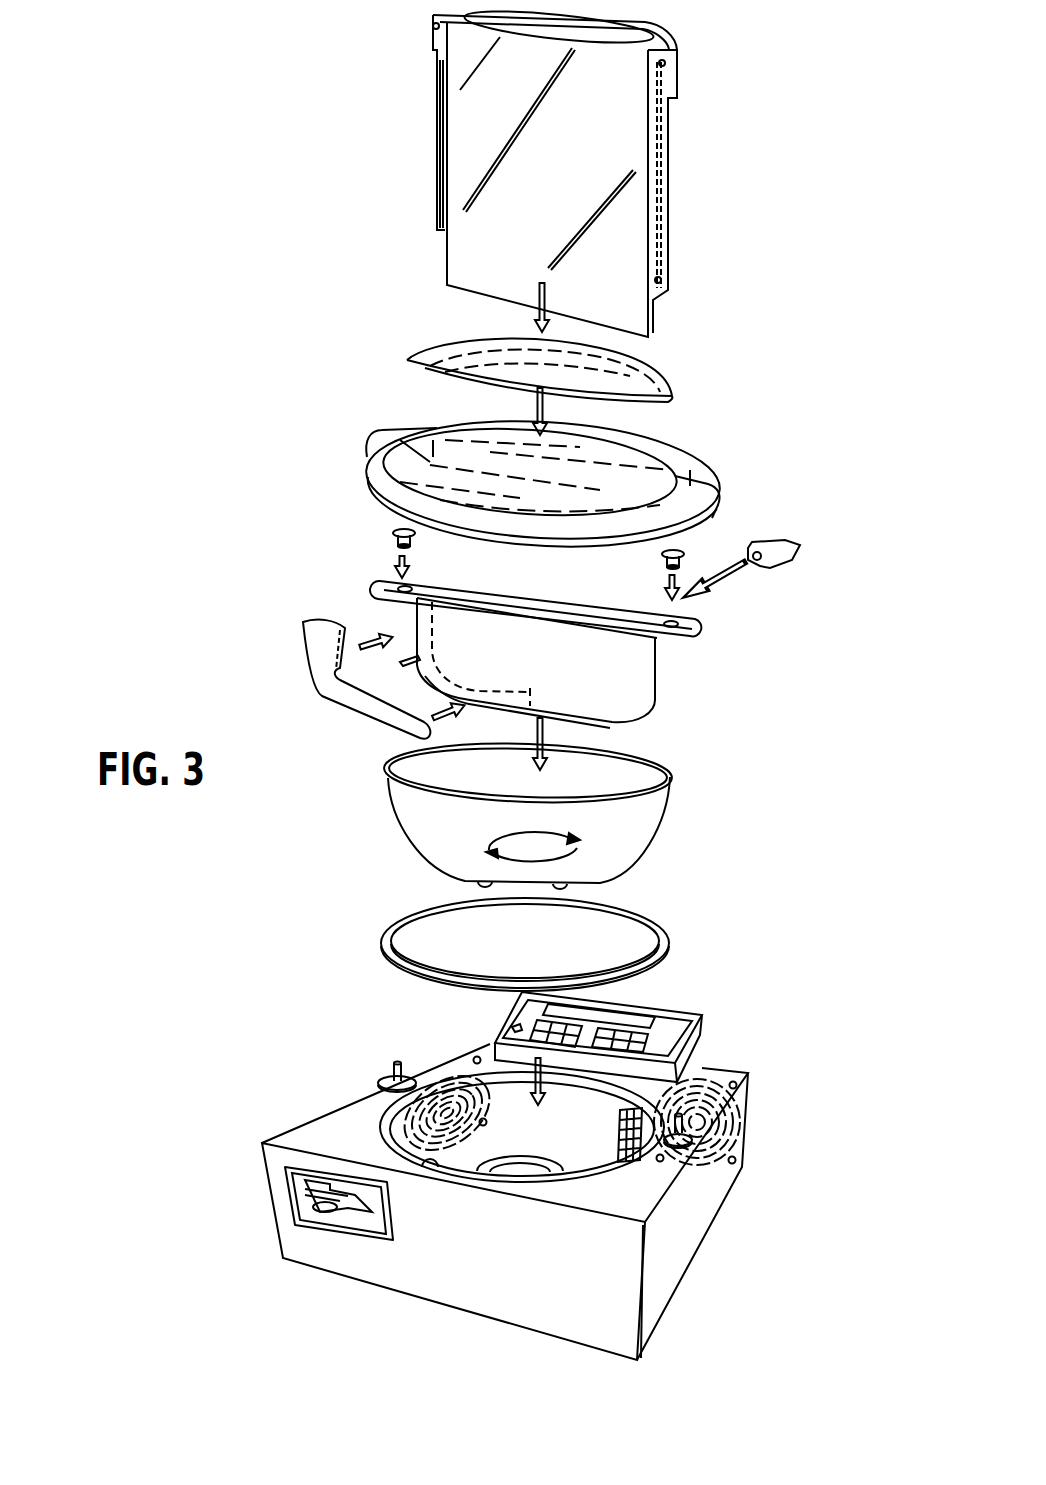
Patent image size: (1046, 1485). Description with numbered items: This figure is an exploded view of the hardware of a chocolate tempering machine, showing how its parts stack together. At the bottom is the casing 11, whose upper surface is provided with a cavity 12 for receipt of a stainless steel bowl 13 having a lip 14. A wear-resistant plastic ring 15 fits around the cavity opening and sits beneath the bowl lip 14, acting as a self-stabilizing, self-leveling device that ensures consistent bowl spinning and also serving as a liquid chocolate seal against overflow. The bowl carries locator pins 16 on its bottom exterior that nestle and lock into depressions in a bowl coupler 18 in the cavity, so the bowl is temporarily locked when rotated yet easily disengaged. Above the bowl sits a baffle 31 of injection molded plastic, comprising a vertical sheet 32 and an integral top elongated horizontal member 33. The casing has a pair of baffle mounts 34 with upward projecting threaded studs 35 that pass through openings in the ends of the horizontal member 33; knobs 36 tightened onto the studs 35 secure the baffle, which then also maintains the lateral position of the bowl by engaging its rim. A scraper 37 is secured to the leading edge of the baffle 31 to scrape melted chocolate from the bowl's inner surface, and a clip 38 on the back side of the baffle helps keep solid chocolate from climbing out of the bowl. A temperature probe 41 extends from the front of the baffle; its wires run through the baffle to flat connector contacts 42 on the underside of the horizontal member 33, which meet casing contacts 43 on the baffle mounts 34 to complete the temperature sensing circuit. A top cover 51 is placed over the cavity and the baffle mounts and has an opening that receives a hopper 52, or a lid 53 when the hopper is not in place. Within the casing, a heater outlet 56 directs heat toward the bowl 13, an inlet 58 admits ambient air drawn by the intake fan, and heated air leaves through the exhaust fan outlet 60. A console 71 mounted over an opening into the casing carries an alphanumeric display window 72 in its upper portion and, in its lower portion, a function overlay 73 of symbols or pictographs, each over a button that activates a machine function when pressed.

The casing 11 is at (500, 1185).
The cavity 12 is at (448, 1160).
The bowl 13 is at (519, 813).
The lip 14 is at (672, 776).
The wear-resistant plastic ring 15 is at (385, 940).
The locator pins 16 is at (568, 886).
The bowl coupler 18 is at (520, 1165).
The baffle 31 is at (655, 680).
The vertical sheet 32 is at (625, 715).
The top elongated horizontal member 33 is at (698, 623).
The baffle mounts 34 is at (385, 1083).
The threaded studs 35 is at (395, 1065).
The knobs 36 is at (397, 530).
The scraper 37 is at (308, 692).
The clip 38 is at (790, 549).
The temperature probe 41 is at (410, 660).
The flat connector contacts 42 is at (372, 604).
The casing contacts 43 is at (402, 1066).
The top cover 51 is at (393, 440).
The hopper 52 is at (455, 127).
The lid 53 is at (660, 378).
The heater outlet 56 is at (640, 1160).
The inlet 58 is at (725, 1136).
The exhaust fan outlet 60 is at (428, 1115).
The console 71 is at (657, 1019).
The alphanumeric display window 72 is at (627, 1018).
The function overlay 73 is at (662, 1040).